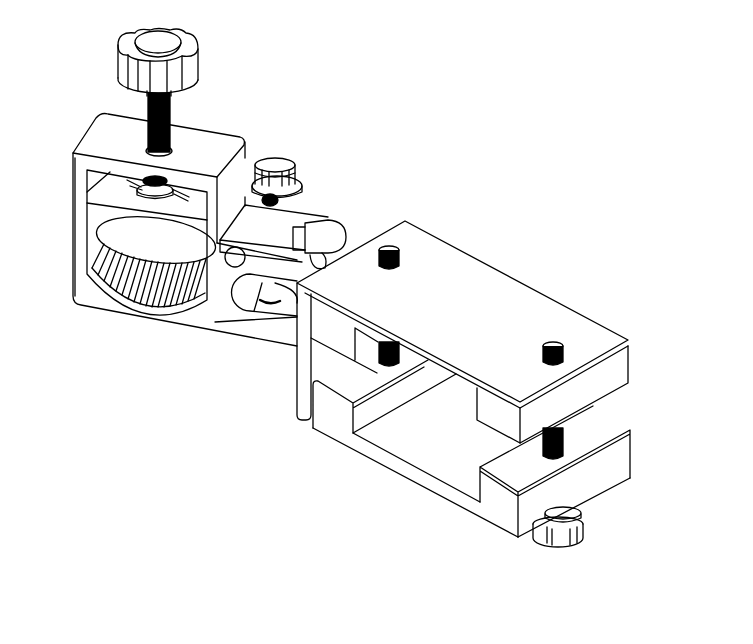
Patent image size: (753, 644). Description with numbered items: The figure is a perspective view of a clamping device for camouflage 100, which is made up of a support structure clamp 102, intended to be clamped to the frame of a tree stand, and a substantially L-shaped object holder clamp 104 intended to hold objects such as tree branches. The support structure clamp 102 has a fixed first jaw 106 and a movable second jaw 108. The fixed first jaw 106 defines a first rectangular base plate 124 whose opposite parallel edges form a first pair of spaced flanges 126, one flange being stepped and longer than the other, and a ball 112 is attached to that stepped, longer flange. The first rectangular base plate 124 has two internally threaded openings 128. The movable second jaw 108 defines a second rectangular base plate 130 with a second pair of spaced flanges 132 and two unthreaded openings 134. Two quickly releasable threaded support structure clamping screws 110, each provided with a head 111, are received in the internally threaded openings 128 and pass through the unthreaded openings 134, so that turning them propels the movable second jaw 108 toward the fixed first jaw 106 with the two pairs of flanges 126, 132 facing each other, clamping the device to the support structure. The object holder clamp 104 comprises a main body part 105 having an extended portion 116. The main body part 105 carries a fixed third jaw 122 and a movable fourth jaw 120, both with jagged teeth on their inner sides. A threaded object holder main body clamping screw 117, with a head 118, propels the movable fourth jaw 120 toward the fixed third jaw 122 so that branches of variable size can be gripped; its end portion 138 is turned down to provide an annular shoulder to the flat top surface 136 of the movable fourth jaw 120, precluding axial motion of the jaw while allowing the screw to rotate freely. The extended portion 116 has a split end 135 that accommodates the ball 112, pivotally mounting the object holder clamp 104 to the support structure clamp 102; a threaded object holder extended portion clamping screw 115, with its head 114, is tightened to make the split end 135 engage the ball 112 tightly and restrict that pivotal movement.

The clamping device for camouflage 100 is at (508, 118).
The support structure clamp 102 is at (498, 245).
The substantially L-shaped object holder clamp 104 is at (214, 128).
The main body part 105 is at (83, 293).
The fixed first jaw 106 is at (630, 338).
The movable second jaw 108 is at (518, 533).
The threaded support structure clamping screws 110 is at (388, 255).
The heads 111 is at (562, 540).
The ball 112 is at (265, 284).
The head 114 is at (282, 159).
The threaded object holder extended portion clamping screw 115 is at (298, 184).
The extended portion 116 is at (252, 328).
The threaded object holder main body clamping screw 117 is at (170, 118).
The head 118 is at (188, 45).
The movable fourth jaw 120 is at (97, 208).
The fixed third jaw 122 is at (160, 298).
The first rectangular base plate 124 is at (510, 300).
The first pair of spaced flanges 126 is at (323, 325).
The internally threaded openings 128 is at (400, 277).
The second rectangular base plate 130 is at (413, 470).
The second pair of spaced flanges 132 is at (333, 421).
The unthreaded openings 134 is at (378, 362).
The split end 135 is at (327, 223).
The flat top surface 136 is at (115, 195).
The end portion 138 is at (140, 174).